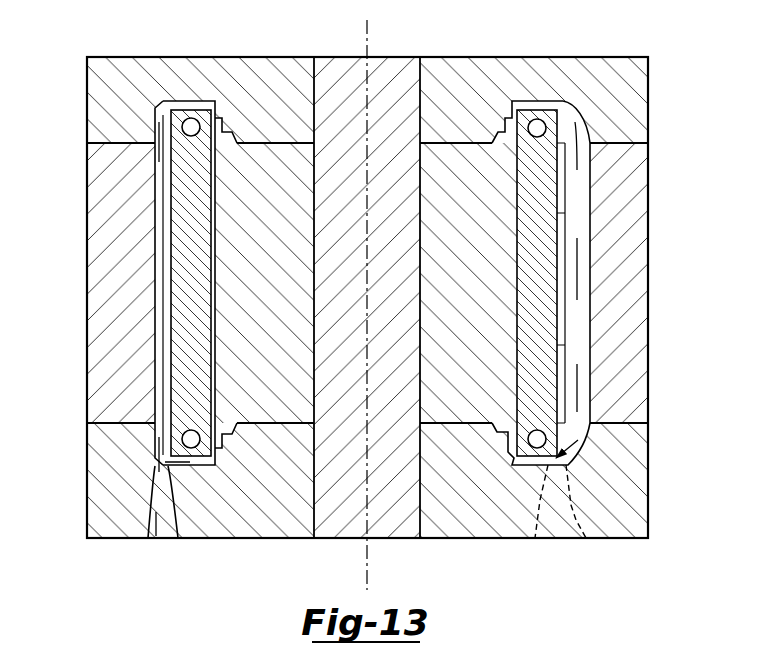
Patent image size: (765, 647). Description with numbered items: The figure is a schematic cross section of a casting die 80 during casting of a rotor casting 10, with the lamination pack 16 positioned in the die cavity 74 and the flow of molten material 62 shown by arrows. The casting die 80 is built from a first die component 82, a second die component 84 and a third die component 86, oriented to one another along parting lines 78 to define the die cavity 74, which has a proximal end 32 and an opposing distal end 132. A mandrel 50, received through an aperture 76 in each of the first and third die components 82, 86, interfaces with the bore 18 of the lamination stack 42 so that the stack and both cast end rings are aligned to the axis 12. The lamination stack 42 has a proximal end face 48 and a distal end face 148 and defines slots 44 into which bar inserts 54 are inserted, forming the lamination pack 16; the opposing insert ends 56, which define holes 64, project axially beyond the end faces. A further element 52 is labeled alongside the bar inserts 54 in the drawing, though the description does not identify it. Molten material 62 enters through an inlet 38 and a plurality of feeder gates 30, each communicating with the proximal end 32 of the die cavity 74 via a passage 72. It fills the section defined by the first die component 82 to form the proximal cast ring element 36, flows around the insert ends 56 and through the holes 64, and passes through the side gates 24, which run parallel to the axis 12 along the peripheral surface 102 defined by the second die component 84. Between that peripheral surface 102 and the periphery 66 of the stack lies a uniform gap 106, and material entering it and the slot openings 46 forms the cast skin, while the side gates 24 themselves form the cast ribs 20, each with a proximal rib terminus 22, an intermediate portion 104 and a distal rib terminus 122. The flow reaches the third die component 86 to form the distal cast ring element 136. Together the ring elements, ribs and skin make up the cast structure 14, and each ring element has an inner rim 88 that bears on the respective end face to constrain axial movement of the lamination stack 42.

The rotor casting 10 is at (592, 387).
The axis 12 is at (367, 40).
The cast structure 14 is at (575, 183).
The lamination pack 16 is at (435, 143).
The bore 18 is at (314, 272).
The cast ribs 20 is at (590, 340).
The proximal rib terminus 22 is at (580, 445).
The side gates 24 is at (590, 318).
The feeder gates 30 is at (147, 522).
The proximal end 32 is at (662, 436).
The proximal cast ring element 36 is at (497, 432).
The inlet 38 is at (170, 545).
The lamination stack 42 is at (256, 281).
The slots 44 is at (205, 347).
The slot openings 46 is at (165, 275).
The proximal end face 48 is at (445, 423).
The mandrel 50 is at (340, 57).
The seal outer surface 52 is at (215, 232).
The bar inserts 54 is at (212, 198).
The insert ends 56 is at (154, 118).
The molten material 62 is at (158, 155).
The holes 64 is at (191, 127).
The periphery 66 is at (163, 297).
The passage 72 is at (152, 478).
The die cavity 74 is at (155, 250).
The aperture 76 is at (317, 70).
The parting lines 78 is at (105, 143).
The casting die 80 is at (723, 190).
The first die component 82 is at (87, 440).
The second die component 84 is at (87, 205).
The third die component 86 is at (87, 122).
The inner rim 88 is at (222, 122).
The peripheral surface 102 is at (158, 373).
The intermediate portion 104 is at (592, 240).
The gap 106 is at (157, 335).
The distal rib terminus 122 is at (582, 138).
The distal end 132 is at (676, 80).
The distal cast ring element 136 is at (178, 101).
The distal end face 148 is at (272, 143).